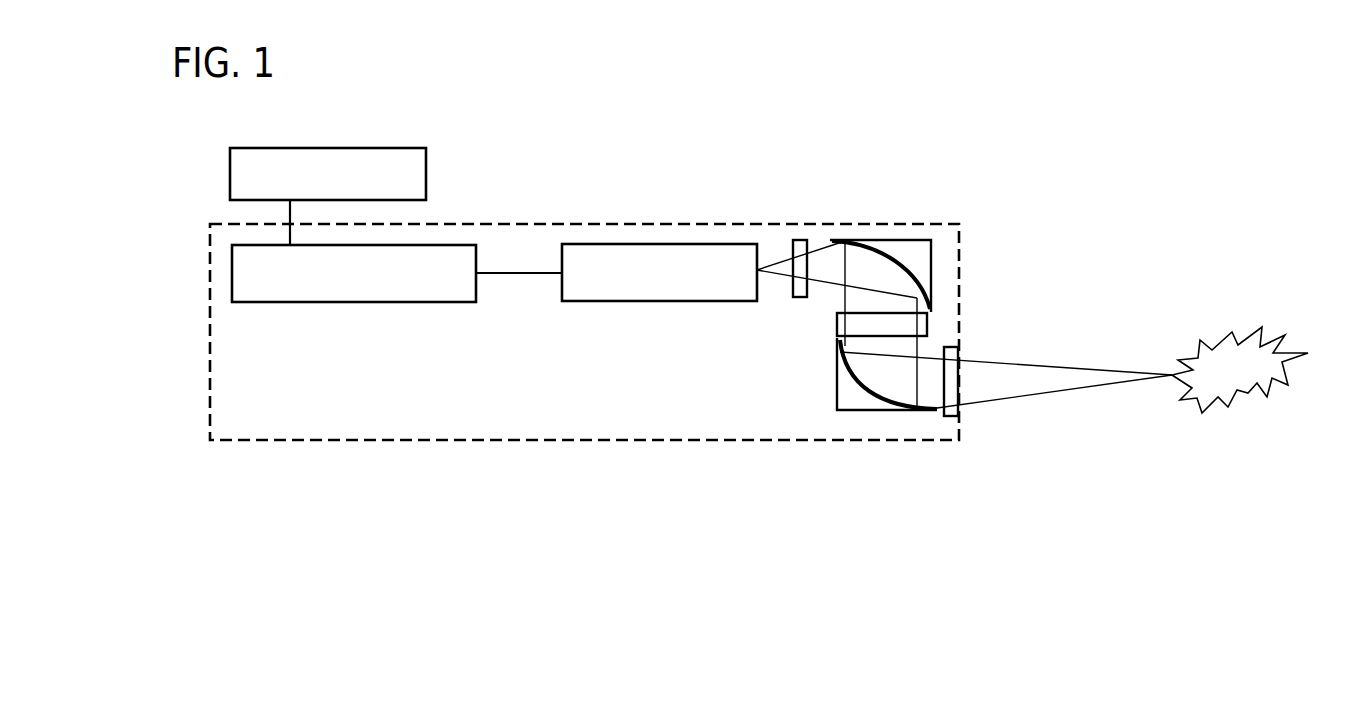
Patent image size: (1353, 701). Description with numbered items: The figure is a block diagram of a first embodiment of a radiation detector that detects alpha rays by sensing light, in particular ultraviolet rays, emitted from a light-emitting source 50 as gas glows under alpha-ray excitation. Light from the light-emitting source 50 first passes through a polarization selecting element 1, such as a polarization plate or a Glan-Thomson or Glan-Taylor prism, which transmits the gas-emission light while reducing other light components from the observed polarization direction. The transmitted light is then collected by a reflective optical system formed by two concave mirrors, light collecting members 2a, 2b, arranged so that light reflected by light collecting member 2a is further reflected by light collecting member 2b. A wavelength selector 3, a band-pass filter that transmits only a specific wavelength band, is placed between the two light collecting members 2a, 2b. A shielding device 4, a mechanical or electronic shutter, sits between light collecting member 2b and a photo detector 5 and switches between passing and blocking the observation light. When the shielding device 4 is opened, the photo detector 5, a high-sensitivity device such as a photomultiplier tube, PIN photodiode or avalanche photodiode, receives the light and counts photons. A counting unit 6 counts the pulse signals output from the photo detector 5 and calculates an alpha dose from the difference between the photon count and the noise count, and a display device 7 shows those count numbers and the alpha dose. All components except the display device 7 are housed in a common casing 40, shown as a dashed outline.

The polarization selecting element 1 is at (952, 416).
The light collecting member 2a is at (870, 410).
The light collecting member 2b is at (887, 240).
The wavelength selector 3 is at (927, 322).
The shielding device 4 is at (800, 240).
The photo detector 5 is at (648, 244).
The counting unit 6 is at (232, 268).
The display device 7 is at (426, 165).
The casing 40 is at (533, 440).
The light-emitting source 50 is at (1182, 347).